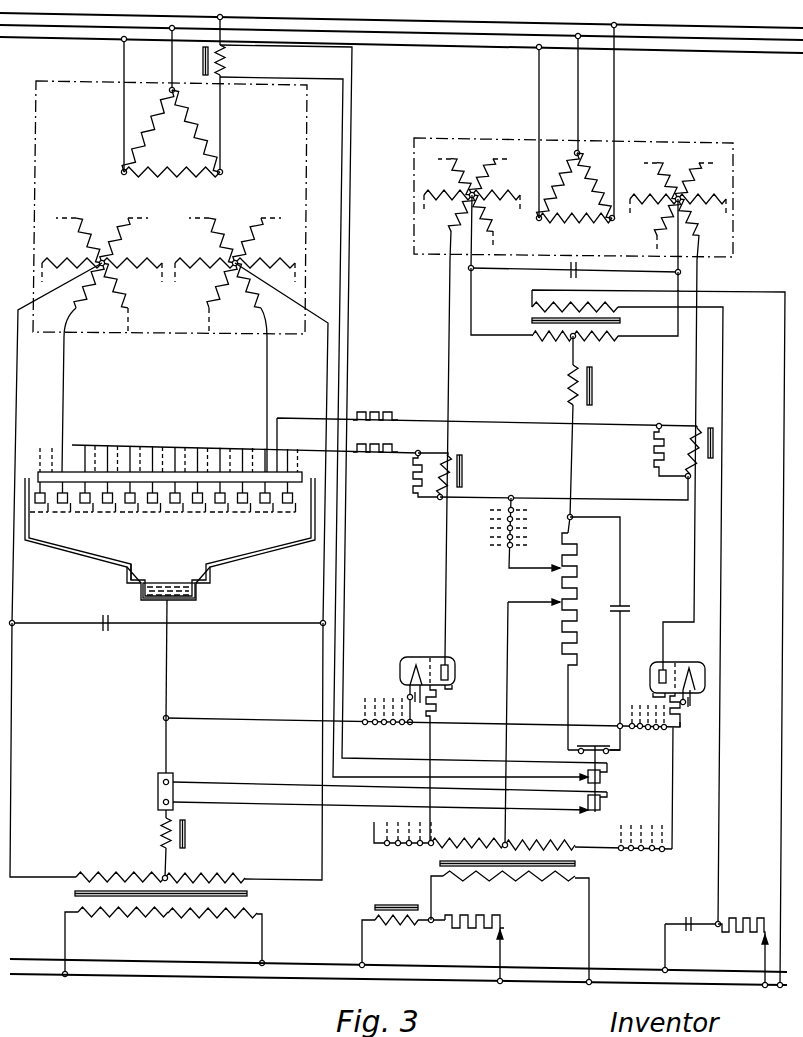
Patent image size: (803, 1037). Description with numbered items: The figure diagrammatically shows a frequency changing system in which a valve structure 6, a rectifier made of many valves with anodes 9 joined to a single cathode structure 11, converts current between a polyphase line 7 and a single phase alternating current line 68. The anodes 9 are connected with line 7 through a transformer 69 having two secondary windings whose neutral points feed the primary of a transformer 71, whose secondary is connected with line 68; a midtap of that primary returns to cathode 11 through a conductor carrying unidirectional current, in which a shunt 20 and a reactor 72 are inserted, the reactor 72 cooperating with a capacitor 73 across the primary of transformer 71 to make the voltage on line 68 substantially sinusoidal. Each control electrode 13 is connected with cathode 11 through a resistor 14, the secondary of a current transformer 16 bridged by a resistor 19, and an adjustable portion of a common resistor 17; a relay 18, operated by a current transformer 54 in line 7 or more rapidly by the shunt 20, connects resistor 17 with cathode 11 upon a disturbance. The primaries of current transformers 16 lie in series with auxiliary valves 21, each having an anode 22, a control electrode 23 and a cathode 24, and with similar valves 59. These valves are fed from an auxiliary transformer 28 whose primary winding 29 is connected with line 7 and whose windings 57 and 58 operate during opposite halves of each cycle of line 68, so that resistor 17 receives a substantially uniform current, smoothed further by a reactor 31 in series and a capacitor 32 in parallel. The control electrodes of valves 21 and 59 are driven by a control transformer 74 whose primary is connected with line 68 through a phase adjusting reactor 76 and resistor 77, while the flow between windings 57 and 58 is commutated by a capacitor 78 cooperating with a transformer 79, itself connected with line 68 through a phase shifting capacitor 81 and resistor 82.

The line 7 is at (474, 22).
The current transformer 54 is at (203, 58).
The transformer 69 is at (195, 336).
The auxiliary transformer 28 is at (736, 160).
The winding 57 is at (453, 185).
The winding 58 is at (678, 205).
The primary winding 29 is at (593, 228).
The capacitor 78 is at (571, 276).
The transformer 79 is at (622, 321).
The reactor 31 is at (596, 371).
The resistor 14 is at (374, 416).
The resistor 19 is at (412, 483).
The current transformer 16 is at (464, 470).
The resistor 17 is at (577, 575).
The capacitor 32 is at (622, 608).
The relay 18 is at (603, 781).
The auxiliary valve 21 is at (431, 740).
The anode 22 is at (450, 667).
The control electrode 23 is at (428, 662).
The cathode 24 is at (400, 677).
The valve 59 is at (686, 663).
The valve structure 6 is at (246, 563).
The cathode structure 11 is at (163, 593).
The capacitor 73 is at (103, 618).
The anode 9 is at (59, 505).
The control electrode 13 is at (82, 512).
The shunt 20 is at (158, 786).
The reactor 72 is at (187, 836).
The transformer 71 is at (250, 894).
The single phase alternating current line 68 is at (303, 973).
The reactor 76 is at (398, 905).
The resistor 77 is at (486, 915).
The control transformer 74 is at (580, 865).
The capacitor 81 is at (686, 918).
The resistor 82 is at (749, 918).